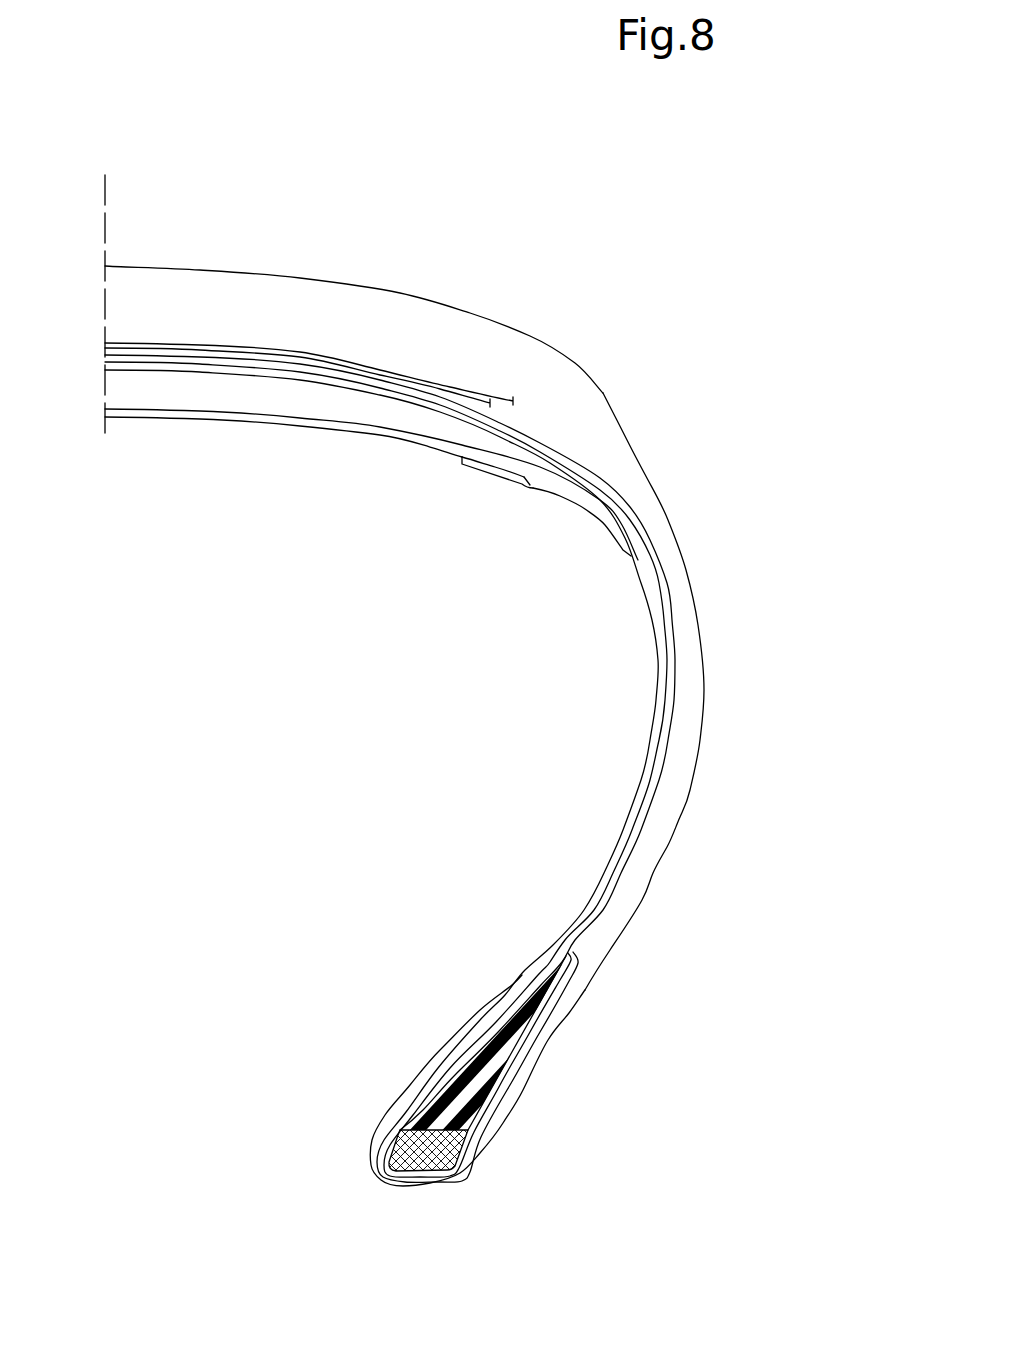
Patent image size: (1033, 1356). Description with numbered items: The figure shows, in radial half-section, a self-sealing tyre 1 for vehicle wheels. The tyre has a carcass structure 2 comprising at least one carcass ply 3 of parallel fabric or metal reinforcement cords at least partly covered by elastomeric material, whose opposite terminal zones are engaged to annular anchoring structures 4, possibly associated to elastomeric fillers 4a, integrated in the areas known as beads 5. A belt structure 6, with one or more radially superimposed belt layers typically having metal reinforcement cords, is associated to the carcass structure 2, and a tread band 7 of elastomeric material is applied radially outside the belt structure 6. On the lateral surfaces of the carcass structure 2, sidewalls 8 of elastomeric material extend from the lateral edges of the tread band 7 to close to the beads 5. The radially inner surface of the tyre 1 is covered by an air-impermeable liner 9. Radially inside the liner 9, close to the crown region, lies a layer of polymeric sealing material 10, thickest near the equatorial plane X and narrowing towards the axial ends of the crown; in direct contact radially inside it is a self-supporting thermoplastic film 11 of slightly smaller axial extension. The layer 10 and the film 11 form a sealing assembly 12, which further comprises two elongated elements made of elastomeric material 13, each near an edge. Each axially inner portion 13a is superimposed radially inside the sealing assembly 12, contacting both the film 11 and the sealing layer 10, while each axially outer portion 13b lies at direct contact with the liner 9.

The self-sealing tyre 1 is at (260, 800).
The carcass structure 2 is at (567, 452).
The carcass ply 3 is at (467, 413).
The annular anchoring structure 4 is at (424, 1153).
The elastomeric filler 4a is at (493, 1047).
The bead 5 is at (541, 1161).
The belt structure 6 is at (445, 372).
The tread band 7 is at (272, 272).
The sidewall 8 is at (704, 728).
The liner 9 is at (657, 717).
The layer of polymeric sealing material 10 is at (240, 398).
The self-supporting thermoplastic film 11 is at (308, 428).
The sealing assembly 12 is at (121, 433).
The elongated element made of elastomeric material 13 is at (506, 556).
The axially inner portion 13a is at (487, 466).
The axially outer portion 13b is at (618, 546).
The equatorial plane X is at (105, 199).